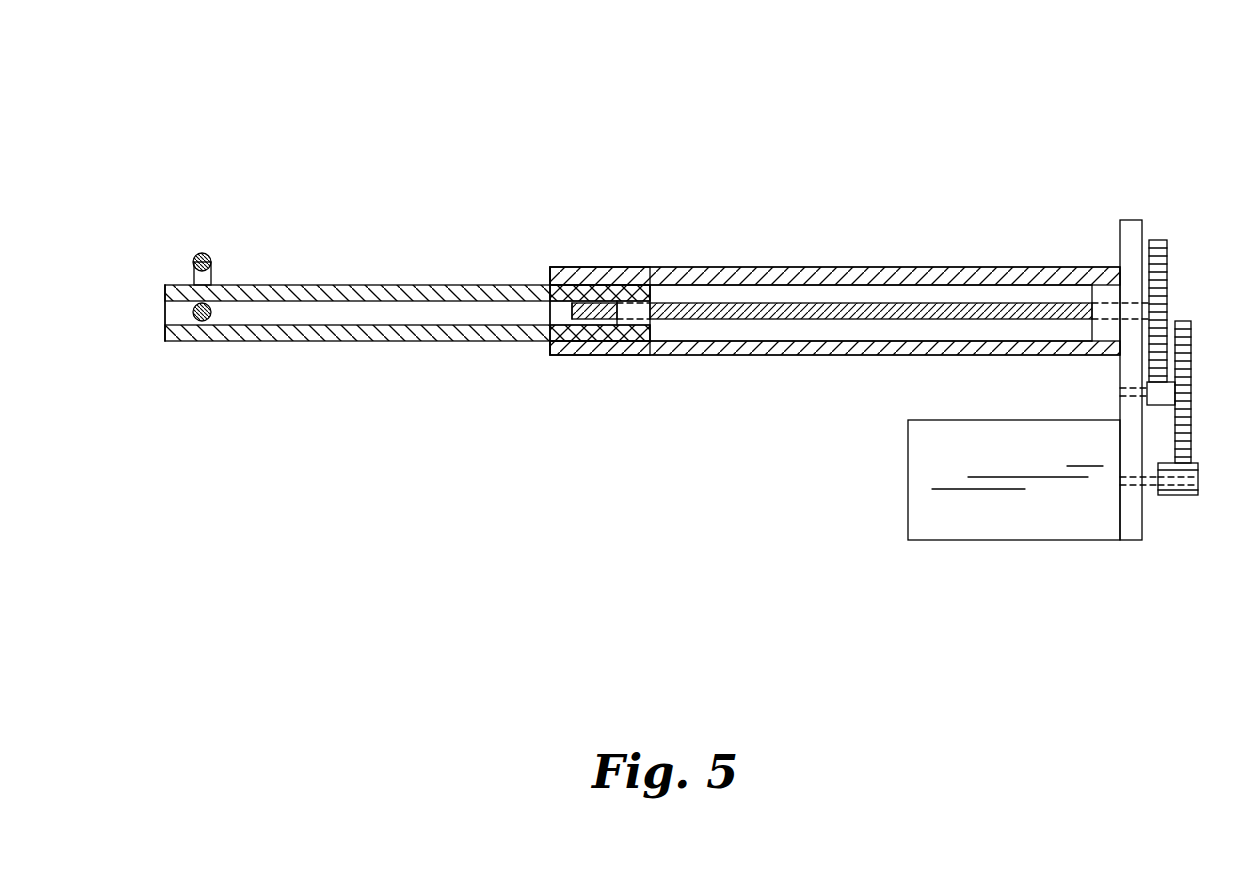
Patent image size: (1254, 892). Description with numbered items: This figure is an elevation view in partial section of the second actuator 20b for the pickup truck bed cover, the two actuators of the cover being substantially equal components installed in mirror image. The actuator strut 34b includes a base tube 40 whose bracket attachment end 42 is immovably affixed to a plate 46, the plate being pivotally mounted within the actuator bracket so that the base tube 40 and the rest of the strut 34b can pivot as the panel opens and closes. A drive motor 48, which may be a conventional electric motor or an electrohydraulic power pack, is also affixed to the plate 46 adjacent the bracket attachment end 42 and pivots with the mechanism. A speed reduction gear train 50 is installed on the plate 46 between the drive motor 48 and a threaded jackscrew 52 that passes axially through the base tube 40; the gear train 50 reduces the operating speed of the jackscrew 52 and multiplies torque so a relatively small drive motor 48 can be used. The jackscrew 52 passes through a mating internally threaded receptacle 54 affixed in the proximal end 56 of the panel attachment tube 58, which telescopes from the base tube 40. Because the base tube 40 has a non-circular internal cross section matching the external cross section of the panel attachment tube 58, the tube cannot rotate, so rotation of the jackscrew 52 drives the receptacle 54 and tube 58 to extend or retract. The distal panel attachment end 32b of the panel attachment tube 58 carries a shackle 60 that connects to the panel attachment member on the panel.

The second actuator 20b is at (797, 438).
The panel attachment end 32b is at (172, 343).
The actuator strut 34b is at (600, 252).
The base tube 40 is at (847, 266).
The bracket attachment end 42 is at (1065, 267).
The plate 46 is at (1130, 219).
The drive motor 48 is at (985, 542).
The speed reduction gear train 50 is at (1168, 300).
The threaded jackscrew 52 is at (932, 303).
The internally threaded receptacle 54 is at (638, 287).
The proximal end 56 is at (590, 355).
The panel attachment tube 58 is at (365, 285).
The shackle 60 is at (205, 255).